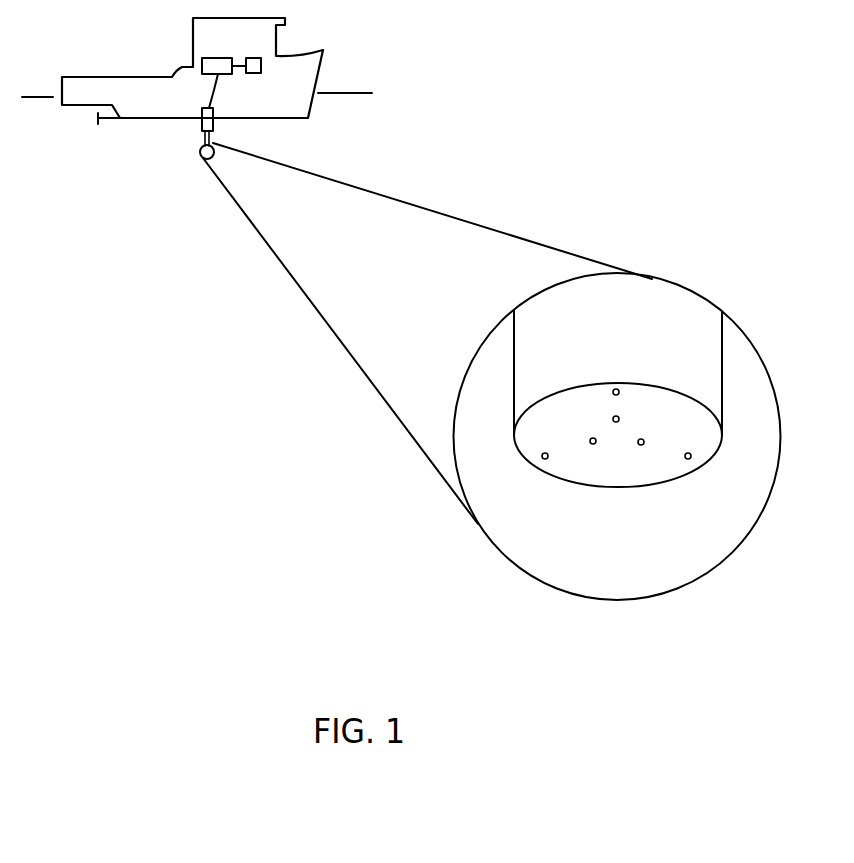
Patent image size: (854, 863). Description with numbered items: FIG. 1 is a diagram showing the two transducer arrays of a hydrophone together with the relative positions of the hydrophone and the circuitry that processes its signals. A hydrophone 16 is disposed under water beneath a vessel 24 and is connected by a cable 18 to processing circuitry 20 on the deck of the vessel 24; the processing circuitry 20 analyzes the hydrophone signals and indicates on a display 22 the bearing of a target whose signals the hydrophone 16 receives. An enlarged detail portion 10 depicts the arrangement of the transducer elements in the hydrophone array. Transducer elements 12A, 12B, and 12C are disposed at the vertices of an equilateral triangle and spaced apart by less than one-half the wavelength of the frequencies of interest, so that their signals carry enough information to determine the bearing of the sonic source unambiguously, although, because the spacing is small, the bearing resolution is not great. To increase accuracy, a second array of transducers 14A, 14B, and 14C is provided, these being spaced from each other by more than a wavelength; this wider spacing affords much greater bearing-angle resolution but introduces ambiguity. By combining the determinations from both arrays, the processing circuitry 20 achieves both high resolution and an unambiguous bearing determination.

The detail portion 10 is at (751, 344).
The transducer element 12A is at (619, 417).
The transducer element 12B is at (640, 445).
The transducer element 12C is at (590, 439).
The transducer 14A is at (618, 389).
The transducer 14B is at (691, 459).
The transducer 14C is at (543, 459).
The hydrophone 16 is at (201, 134).
The cable 18 is at (215, 84).
The processing circuitry 20 is at (214, 58).
The display 22 is at (250, 58).
The vessel 24 is at (326, 53).